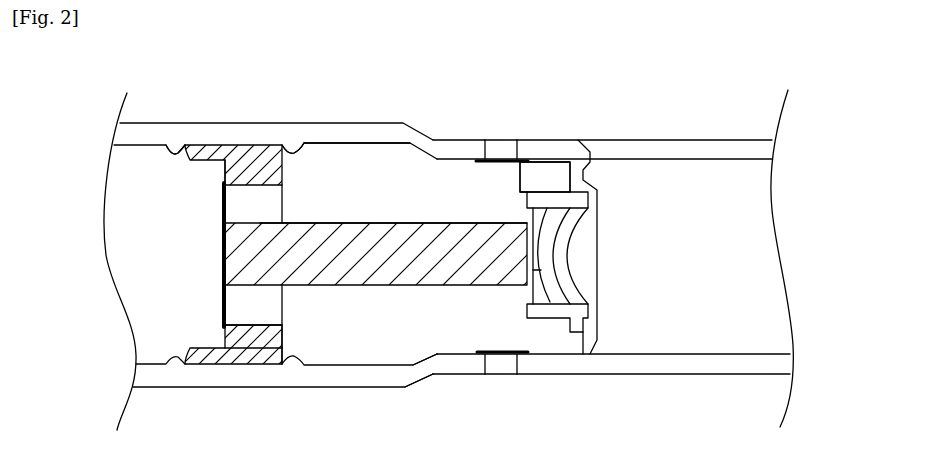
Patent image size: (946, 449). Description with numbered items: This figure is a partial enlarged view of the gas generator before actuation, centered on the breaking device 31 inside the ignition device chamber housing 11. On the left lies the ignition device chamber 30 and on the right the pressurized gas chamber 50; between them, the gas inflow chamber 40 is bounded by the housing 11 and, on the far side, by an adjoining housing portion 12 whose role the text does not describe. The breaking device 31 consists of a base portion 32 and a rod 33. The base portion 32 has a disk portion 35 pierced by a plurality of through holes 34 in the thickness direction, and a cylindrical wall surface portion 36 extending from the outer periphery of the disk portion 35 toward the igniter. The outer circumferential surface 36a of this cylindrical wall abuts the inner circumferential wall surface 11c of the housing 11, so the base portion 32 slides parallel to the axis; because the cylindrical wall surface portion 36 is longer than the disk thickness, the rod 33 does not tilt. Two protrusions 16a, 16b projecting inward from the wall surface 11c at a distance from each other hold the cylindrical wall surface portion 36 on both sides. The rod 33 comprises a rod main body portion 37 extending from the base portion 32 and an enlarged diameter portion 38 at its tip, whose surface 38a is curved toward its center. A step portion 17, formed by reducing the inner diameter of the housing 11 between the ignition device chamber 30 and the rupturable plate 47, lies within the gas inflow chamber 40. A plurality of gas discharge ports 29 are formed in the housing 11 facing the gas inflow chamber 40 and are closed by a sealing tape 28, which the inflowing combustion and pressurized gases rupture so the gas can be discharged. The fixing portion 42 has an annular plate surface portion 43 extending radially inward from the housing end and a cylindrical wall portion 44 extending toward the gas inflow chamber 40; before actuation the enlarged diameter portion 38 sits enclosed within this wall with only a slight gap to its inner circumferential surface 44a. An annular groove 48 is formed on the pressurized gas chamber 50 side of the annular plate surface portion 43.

The ignition device chamber housing 11 is at (235, 133).
The inner circumferential wall surface 11c is at (366, 150).
The second housing 12 is at (733, 147).
The protrusion 16a is at (180, 156).
The protrusion 16b is at (297, 152).
The step portion 17 is at (425, 353).
The sealing tape 28 is at (485, 168).
The gas discharge ports 29 is at (500, 146).
The ignition device chamber 30 is at (145, 245).
The breaking device 31 is at (366, 292).
The base portion 32 is at (260, 342).
The rod 33 is at (283, 265).
The through holes 34 is at (248, 207).
The disk portion 35 is at (227, 342).
The cylindrical wall surface portion 36 is at (230, 368).
The outer circumferential surface 36a is at (260, 367).
The rod main body portion 37 is at (400, 245).
The enlarged diameter portion 38 is at (528, 218).
The surface 38a is at (540, 270).
The gas inflow chamber 40 is at (375, 180).
The fixing portion 42 is at (620, 247).
The annular plate surface portion 43 is at (578, 168).
The cylindrical wall portion 44 is at (590, 212).
The inner circumferential surface 44a is at (545, 177).
The rupturable plate 47 is at (578, 254).
The annular groove 48 is at (598, 332).
The pressurized gas chamber 50 is at (741, 240).